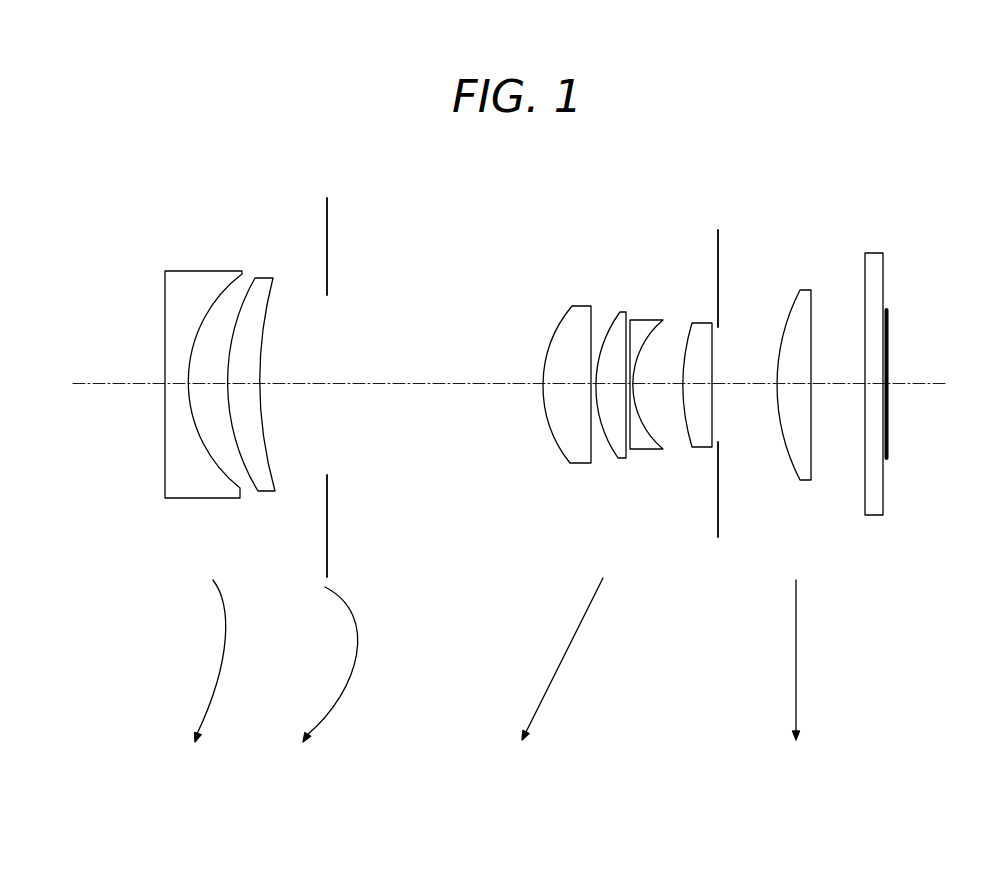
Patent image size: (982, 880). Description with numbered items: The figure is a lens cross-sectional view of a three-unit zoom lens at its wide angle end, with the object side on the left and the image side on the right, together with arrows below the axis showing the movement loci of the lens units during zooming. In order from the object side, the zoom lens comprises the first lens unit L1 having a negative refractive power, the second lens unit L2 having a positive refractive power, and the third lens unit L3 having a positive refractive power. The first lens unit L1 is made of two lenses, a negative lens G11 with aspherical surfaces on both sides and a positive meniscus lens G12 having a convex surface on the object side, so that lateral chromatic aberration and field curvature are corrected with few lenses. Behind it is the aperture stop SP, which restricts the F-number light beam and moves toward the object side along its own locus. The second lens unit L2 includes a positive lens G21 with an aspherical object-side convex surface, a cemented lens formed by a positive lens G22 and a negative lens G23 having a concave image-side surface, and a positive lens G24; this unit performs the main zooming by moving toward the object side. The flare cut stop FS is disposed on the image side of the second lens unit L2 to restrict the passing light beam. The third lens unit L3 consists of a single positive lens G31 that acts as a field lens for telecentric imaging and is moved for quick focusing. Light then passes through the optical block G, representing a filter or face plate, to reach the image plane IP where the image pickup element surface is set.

The first lens unit L1 is at (257, 183).
The negative lens G11 is at (199, 280).
The positive meniscus lens G12 is at (268, 278).
The aperture stop SP is at (327, 222).
The second lens unit L2 is at (705, 185).
The positive lens G21 is at (580, 317).
The positive lens G22 is at (617, 322).
The negative lens G23 is at (648, 322).
The positive lens G24 is at (708, 322).
The flare cut stop FS is at (718, 522).
The third lens unit L3 is at (810, 184).
The positive lens G31 is at (802, 287).
The optical block G is at (883, 183).
The image plane IP is at (892, 320).